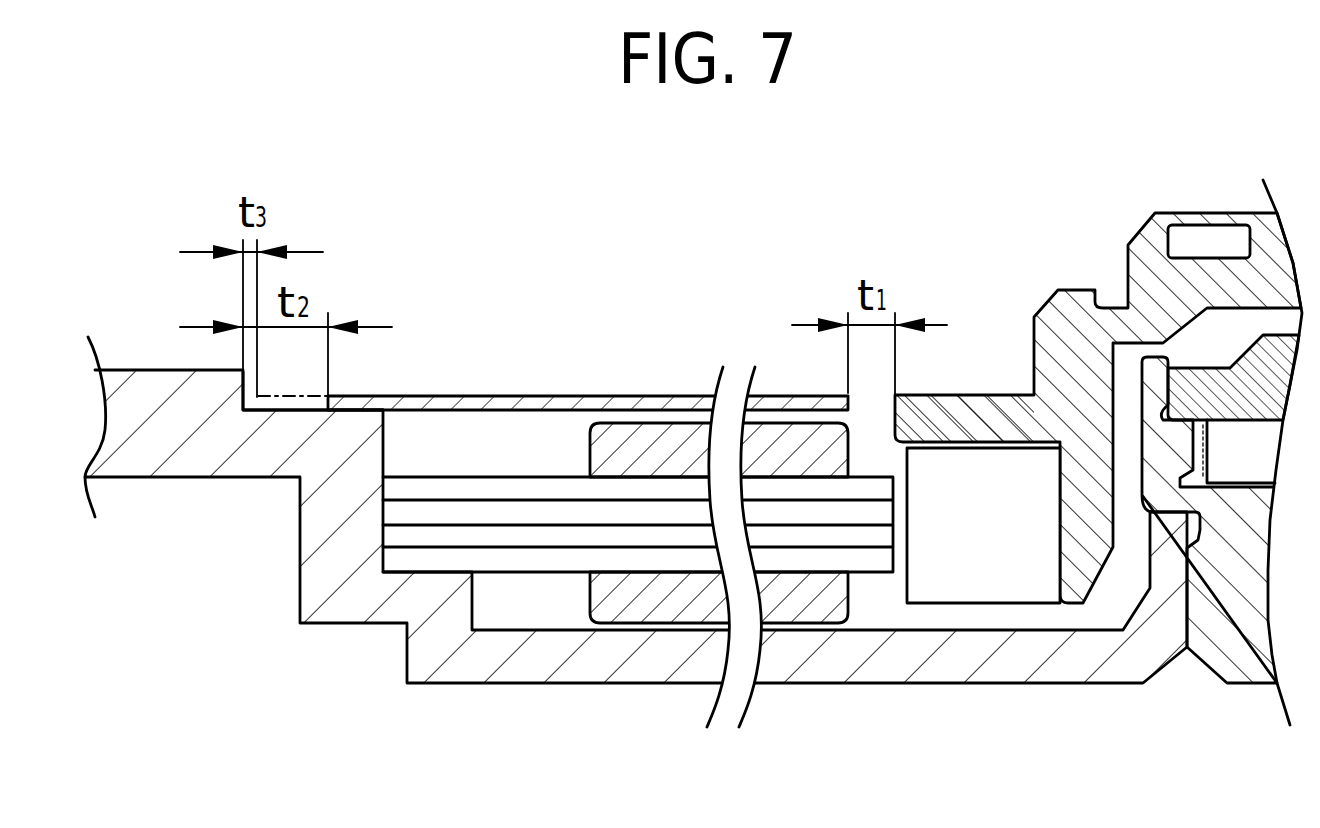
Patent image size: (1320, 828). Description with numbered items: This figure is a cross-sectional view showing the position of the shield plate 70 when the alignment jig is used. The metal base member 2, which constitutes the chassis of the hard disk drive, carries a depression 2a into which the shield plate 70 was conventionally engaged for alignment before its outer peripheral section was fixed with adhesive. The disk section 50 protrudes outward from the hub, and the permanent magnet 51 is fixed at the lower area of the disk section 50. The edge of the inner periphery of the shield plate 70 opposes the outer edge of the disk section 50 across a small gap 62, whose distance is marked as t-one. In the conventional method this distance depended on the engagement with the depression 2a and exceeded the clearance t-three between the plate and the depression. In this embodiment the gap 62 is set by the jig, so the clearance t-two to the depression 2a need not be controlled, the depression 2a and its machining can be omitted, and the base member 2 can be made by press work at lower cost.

The base member 2 is at (490, 685).
The depression 2a is at (363, 395).
The disk section 50 is at (982, 393).
The permanent magnet 51 is at (990, 582).
The small gap 62 is at (870, 403).
The shield plate 70 is at (570, 395).